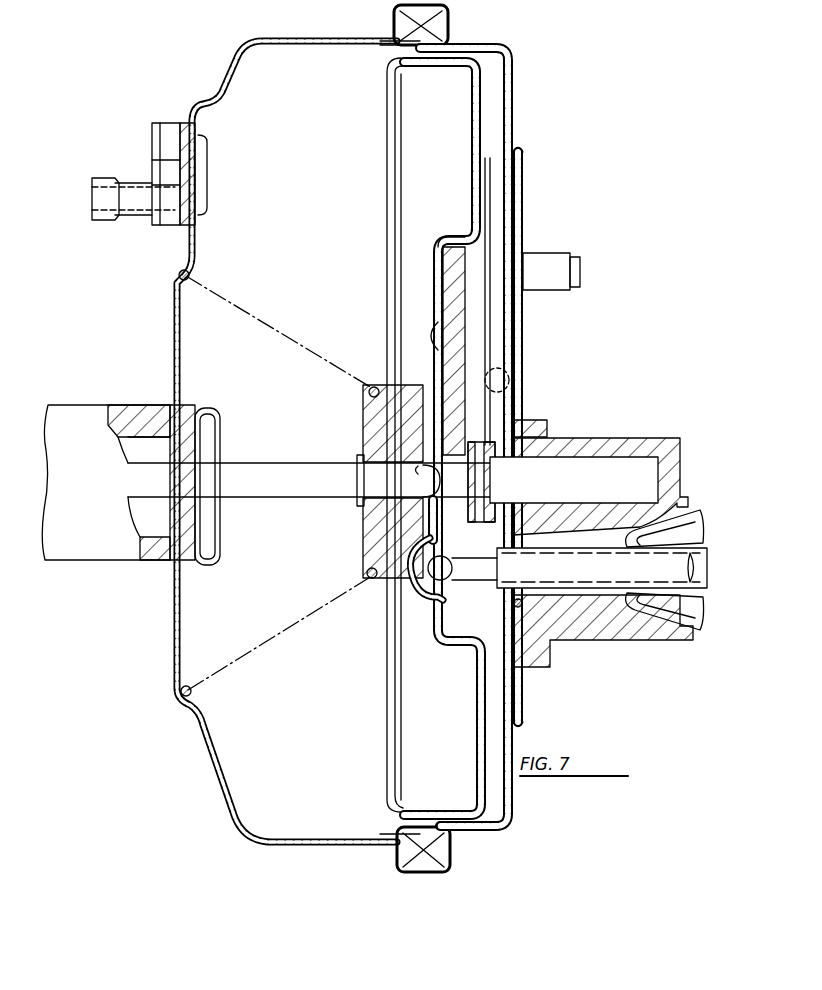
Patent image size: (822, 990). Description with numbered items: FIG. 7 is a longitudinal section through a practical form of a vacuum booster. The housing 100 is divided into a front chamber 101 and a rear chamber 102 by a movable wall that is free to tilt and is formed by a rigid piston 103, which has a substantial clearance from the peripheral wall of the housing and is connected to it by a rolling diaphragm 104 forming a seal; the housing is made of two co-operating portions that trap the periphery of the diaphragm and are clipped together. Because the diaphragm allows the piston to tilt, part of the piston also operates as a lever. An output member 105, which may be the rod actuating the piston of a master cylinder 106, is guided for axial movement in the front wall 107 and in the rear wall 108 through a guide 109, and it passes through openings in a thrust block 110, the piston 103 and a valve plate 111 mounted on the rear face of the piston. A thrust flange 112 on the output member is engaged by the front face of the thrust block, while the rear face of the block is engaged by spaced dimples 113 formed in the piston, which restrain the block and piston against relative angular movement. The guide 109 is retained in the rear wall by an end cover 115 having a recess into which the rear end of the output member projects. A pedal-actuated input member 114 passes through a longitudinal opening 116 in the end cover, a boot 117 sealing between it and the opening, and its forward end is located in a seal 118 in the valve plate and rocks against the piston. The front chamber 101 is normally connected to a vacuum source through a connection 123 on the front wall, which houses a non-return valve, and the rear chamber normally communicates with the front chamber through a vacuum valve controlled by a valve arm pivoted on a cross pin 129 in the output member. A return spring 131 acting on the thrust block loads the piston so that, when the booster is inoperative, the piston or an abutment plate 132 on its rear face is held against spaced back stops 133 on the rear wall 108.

The housing 100 is at (306, 843).
The front chamber 101 is at (315, 178).
The rear chamber 102 is at (496, 109).
The piston 103 is at (440, 275).
The rolling diaphragm 104 is at (482, 78).
The output member 105 is at (268, 463).
The master cylinder 106 is at (86, 406).
The front wall 107 is at (177, 568).
The rear wall 108 is at (523, 192).
The guide 109 is at (536, 437).
The thrust block 110 is at (365, 545).
The valve plate 111 is at (455, 337).
The thrust flange 112 is at (360, 500).
The dimples 113 is at (418, 474).
The input member 114 is at (614, 579).
The end cover 115 is at (618, 448).
The longitudinal opening 116 is at (597, 610).
The boot 117 is at (684, 510).
The seal 118 is at (452, 640).
The connection 123 is at (156, 188).
The cross pin 129 is at (484, 432).
The return spring 131 is at (192, 692).
The abutment plate 132 is at (490, 305).
The back stops 133 is at (510, 380).